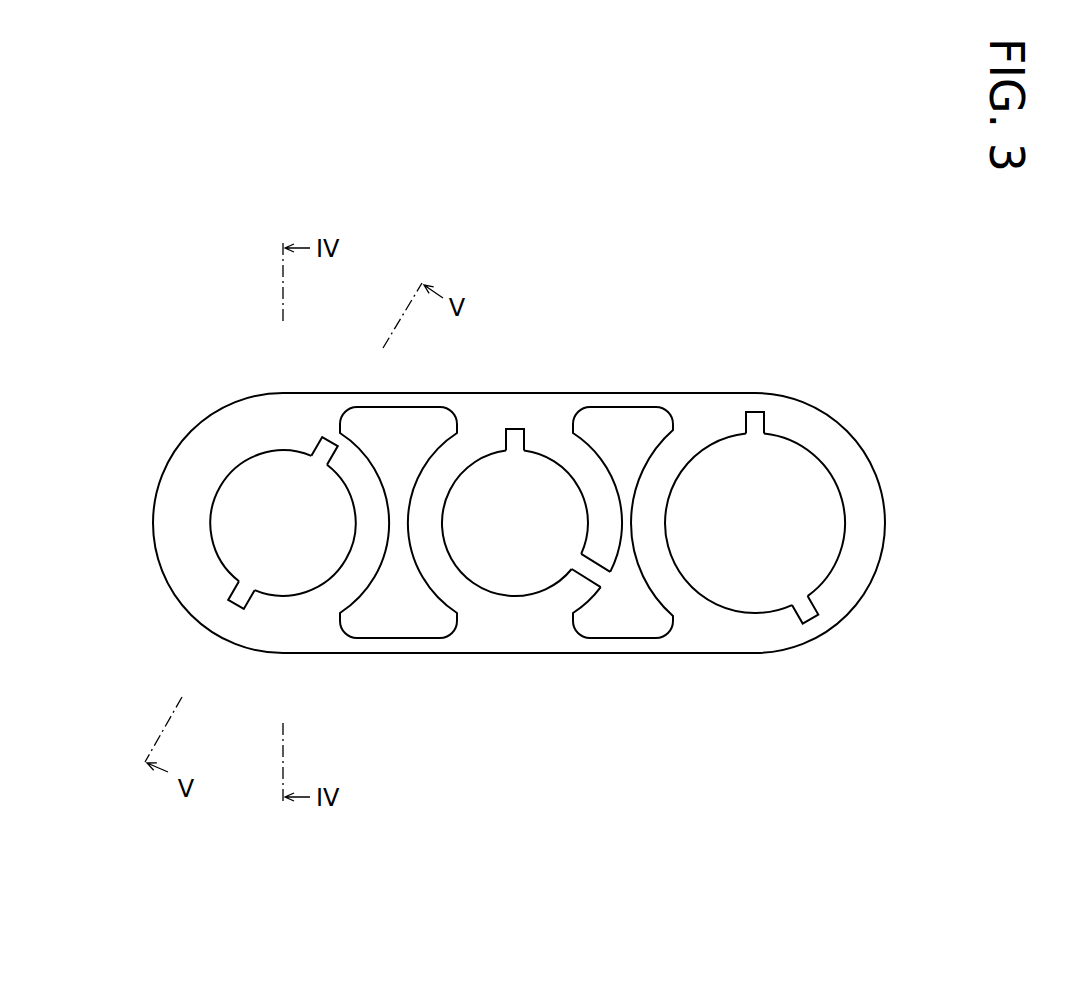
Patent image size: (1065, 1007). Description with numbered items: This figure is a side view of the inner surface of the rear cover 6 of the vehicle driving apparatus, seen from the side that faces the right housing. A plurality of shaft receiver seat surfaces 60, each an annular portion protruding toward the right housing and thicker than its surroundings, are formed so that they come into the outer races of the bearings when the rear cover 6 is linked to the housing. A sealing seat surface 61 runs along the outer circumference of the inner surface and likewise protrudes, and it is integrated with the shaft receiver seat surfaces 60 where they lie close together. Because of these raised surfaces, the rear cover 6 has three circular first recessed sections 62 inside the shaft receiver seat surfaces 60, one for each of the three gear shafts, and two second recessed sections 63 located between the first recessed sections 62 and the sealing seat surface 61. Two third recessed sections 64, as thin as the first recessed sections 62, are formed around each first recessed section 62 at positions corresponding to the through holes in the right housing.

The rear cover 6 is at (143, 400).
The shaft receiver seat surfaces 60 is at (352, 582).
The sealing seat surface 61 is at (410, 402).
The first recessed sections 62 is at (236, 488).
The second recessed sections 63 is at (412, 610).
The third recessed sections 64 is at (330, 455).